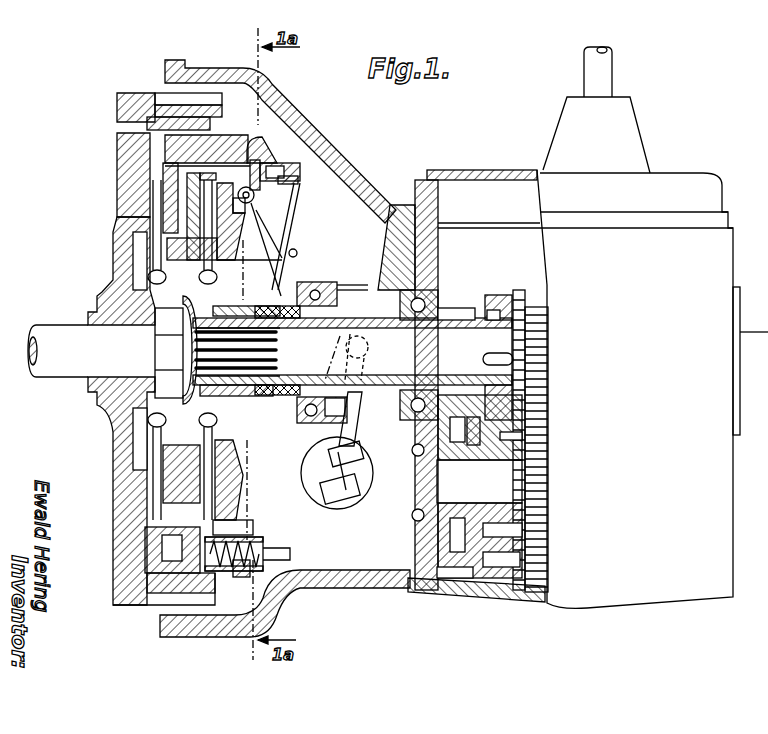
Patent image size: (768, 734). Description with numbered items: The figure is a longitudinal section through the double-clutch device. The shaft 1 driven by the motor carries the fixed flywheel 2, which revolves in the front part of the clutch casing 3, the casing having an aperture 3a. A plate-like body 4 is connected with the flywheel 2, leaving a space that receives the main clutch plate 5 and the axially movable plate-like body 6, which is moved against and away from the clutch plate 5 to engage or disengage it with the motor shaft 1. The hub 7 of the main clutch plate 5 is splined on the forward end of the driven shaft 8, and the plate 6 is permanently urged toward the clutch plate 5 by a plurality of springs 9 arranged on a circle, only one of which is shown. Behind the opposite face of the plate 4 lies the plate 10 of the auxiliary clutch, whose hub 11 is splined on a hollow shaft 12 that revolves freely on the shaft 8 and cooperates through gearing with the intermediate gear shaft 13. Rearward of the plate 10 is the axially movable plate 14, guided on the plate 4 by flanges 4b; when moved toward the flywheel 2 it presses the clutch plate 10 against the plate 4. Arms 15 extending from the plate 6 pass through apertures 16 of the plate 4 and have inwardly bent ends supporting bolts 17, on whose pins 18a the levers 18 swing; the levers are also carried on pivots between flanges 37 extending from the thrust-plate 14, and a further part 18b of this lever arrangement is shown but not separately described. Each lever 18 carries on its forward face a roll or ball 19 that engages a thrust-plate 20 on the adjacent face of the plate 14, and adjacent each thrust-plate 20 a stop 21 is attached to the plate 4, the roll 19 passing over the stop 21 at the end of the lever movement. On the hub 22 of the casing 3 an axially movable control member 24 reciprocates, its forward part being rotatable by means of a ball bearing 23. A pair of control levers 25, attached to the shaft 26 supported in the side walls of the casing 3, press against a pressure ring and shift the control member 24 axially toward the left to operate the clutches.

The motor-driven shaft 1 is at (70, 370).
The flywheel 2 is at (128, 200).
The clutch casing 3 is at (234, 72).
The aperture 3a is at (330, 150).
The plate-like body 4 is at (162, 100).
The main clutch plate 5 is at (146, 497).
The axially movable plate-like body 6 is at (162, 160).
The hub 7 is at (182, 346).
The driven shaft 8 is at (438, 340).
The springs 9 is at (266, 544).
The auxiliary clutch plate 10 is at (242, 501).
The hub 11 is at (268, 395).
The hollow shaft 12 is at (442, 388).
The intermediate gear shaft 13 is at (492, 441).
The axially movable plate 14 is at (243, 240).
The arms 15 is at (257, 160).
The apertures 16 is at (222, 130).
The bolts 17 is at (271, 162).
The levers 18 is at (299, 214).
The pins 18a is at (298, 178).
The lever stop 18b is at (296, 292).
The roll or ball 19 is at (299, 194).
The thrust-plate 20 is at (245, 204).
The stop 21 is at (261, 152).
The hub 22 is at (290, 396).
The ball bearing 23 is at (308, 426).
The control member 24 is at (333, 290).
The control levers 25 is at (366, 364).
The shaft 26 is at (356, 504).
The flanges 37 is at (249, 251).
The flanges 4b is at (244, 530).